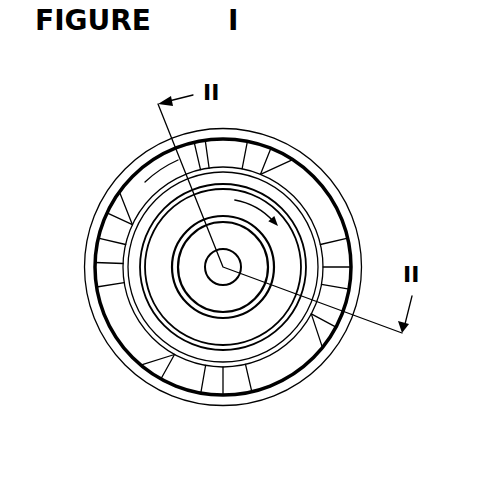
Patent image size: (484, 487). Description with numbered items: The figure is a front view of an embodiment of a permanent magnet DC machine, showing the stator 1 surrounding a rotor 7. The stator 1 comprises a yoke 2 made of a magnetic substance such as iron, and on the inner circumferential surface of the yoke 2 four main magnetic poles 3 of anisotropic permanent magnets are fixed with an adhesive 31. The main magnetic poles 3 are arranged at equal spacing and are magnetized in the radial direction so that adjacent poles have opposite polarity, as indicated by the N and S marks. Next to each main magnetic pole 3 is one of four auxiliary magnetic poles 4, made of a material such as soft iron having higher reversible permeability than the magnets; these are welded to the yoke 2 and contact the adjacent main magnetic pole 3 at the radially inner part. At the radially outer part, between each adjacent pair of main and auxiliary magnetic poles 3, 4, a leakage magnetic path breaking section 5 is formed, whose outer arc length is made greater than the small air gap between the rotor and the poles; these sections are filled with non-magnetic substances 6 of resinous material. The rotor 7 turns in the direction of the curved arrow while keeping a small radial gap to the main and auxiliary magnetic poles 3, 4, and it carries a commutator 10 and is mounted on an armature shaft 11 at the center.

The stator 1 is at (357, 217).
The yoke 2 is at (262, 132).
The main magnetic poles 3 is at (203, 150).
The auxiliary magnetic poles 4 is at (260, 152).
The leakage magnetic path breaking sections 5 is at (278, 163).
The non-magnetic substances 6 is at (290, 170).
The rotor 7 is at (346, 262).
The commutator 10 is at (223, 267).
The armature shaft 11 is at (223, 279).
The adhesive 31 is at (163, 165).